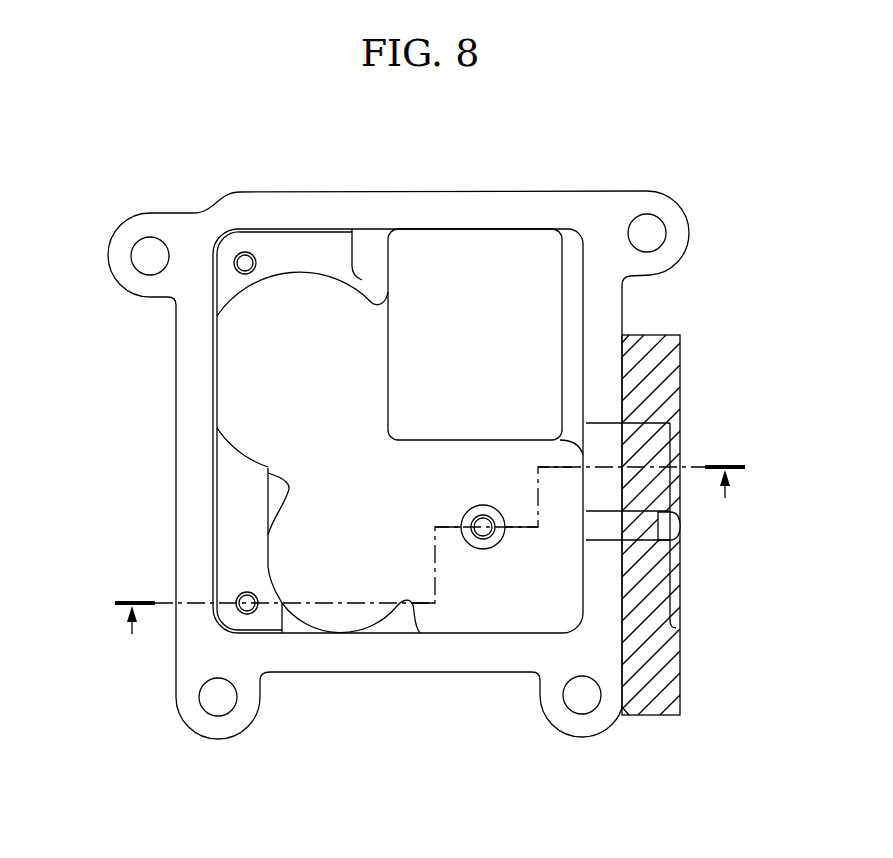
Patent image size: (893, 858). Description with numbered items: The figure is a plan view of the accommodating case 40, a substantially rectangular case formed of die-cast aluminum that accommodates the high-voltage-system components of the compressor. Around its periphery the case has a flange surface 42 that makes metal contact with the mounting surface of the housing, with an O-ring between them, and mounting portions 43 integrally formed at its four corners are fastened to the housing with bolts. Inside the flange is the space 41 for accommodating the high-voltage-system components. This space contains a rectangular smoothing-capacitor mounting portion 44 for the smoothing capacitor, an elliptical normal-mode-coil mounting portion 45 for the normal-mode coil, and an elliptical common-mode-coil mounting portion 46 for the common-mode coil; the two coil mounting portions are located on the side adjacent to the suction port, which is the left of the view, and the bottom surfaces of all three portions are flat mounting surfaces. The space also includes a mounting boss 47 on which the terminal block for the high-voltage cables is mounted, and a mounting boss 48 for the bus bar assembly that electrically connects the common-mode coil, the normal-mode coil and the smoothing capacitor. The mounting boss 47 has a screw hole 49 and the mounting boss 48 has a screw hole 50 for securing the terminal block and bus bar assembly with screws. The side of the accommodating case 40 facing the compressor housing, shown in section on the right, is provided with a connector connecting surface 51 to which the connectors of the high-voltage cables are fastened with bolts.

The accommodating case 40 is at (364, 174).
The space 41 is at (306, 432).
The flange surface 42 is at (520, 214).
The mounting portions 43 is at (128, 238).
The smoothing-capacitor mounting portion 44 is at (543, 305).
The normal-mode-coil mounting portion 45 is at (262, 362).
The common-mode-coil mounting portion 46 is at (345, 548).
The mounting boss 47 is at (497, 541).
The mounting boss 48 is at (243, 572).
The screw hole 49 is at (468, 512).
The screw hole 50 is at (245, 252).
The connector connecting surface 51 is at (682, 670).